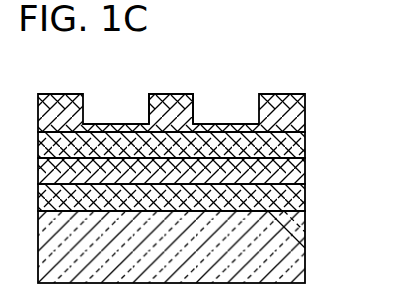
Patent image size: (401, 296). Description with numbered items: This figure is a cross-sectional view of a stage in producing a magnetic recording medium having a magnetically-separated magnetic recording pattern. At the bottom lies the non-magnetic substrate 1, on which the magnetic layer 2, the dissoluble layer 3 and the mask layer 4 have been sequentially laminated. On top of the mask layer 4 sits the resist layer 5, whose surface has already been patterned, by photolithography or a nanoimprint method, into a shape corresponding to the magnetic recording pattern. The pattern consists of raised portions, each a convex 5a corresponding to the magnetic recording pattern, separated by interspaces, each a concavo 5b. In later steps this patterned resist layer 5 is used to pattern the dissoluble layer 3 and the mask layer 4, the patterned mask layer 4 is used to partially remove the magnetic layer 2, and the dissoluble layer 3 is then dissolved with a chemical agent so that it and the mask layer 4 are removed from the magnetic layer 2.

The non-magnetic substrate 1 is at (285, 247).
The magnetic layer 2 is at (285, 198).
The dissoluble layer 3 is at (285, 172).
The mask layer 4 is at (285, 145).
The resist layer 5 is at (283, 115).
The convex 5a is at (168, 93).
The concavo 5b is at (226, 123).